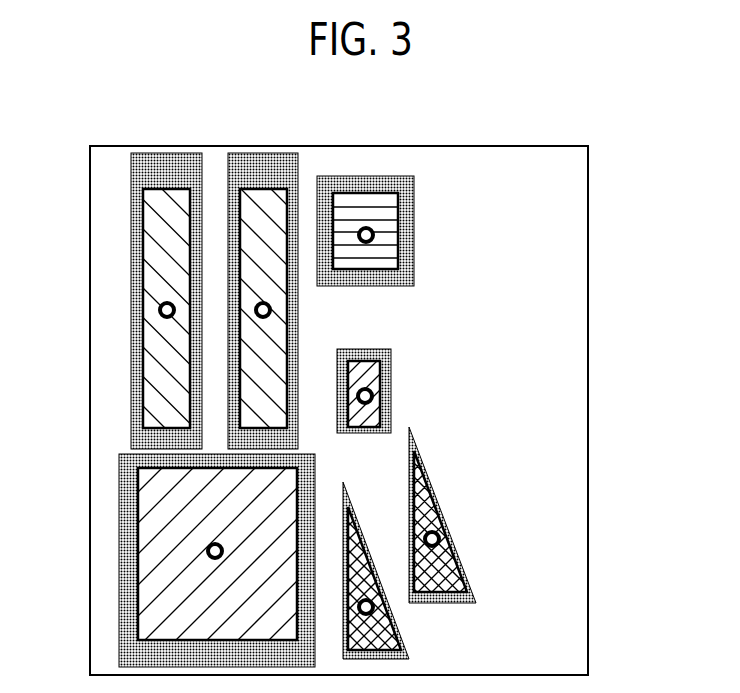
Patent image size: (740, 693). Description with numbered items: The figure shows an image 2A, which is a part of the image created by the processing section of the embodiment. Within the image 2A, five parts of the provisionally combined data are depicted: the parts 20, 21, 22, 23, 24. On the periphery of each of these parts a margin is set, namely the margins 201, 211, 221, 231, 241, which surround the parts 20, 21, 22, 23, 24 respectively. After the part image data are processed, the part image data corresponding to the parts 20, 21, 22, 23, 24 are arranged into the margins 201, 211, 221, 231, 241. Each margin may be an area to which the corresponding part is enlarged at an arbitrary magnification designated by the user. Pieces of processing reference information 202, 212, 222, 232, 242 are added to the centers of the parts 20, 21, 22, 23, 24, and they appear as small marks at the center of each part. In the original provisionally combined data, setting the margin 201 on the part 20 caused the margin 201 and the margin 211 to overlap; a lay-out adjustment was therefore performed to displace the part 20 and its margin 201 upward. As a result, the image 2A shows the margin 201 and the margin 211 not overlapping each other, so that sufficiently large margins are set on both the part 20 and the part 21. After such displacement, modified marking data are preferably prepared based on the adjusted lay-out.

The image 2A is at (542, 142).
The part 20 is at (157, 187).
The margin 201 is at (177, 172).
The processing reference information 202 is at (158, 311).
The part 21 is at (139, 543).
The margin 211 is at (131, 502).
The processing reference information 212 is at (207, 555).
The part 22 is at (380, 397).
The margin 221 is at (368, 352).
The processing reference information 222 is at (373, 392).
The part 23 is at (360, 562).
The margin 231 is at (475, 598).
The processing reference information 232 is at (441, 539).
The part 24 is at (400, 238).
The margin 241 is at (405, 177).
The processing reference information 242 is at (375, 233).